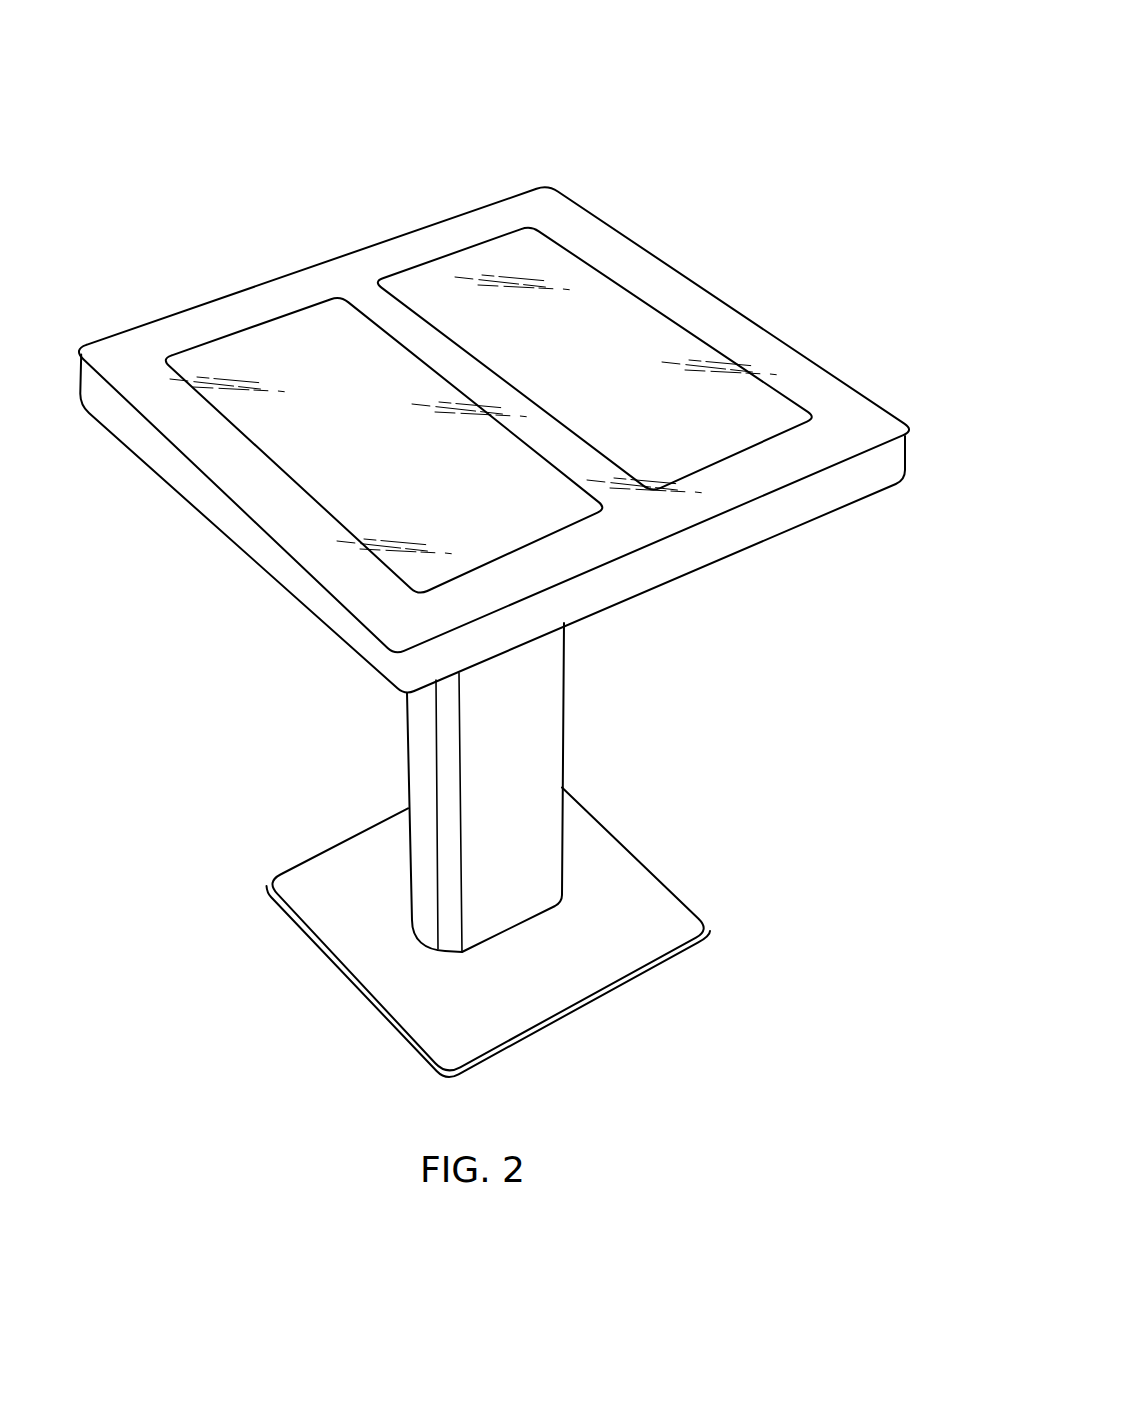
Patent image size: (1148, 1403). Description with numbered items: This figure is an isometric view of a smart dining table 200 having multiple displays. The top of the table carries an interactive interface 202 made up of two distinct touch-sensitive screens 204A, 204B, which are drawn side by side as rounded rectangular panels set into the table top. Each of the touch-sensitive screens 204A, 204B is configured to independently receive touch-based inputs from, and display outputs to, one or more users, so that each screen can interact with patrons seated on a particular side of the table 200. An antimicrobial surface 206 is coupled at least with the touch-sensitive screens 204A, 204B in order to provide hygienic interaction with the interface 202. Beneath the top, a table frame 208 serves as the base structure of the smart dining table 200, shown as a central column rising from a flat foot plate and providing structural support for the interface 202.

The smart dining table 200 is at (752, 98).
The interactive interface 202 is at (852, 423).
The touch-sensitive screen 204A is at (310, 333).
The touch-sensitive screen 204B is at (638, 318).
The antimicrobial surface 206 is at (512, 273).
The table frame 208 is at (538, 686).